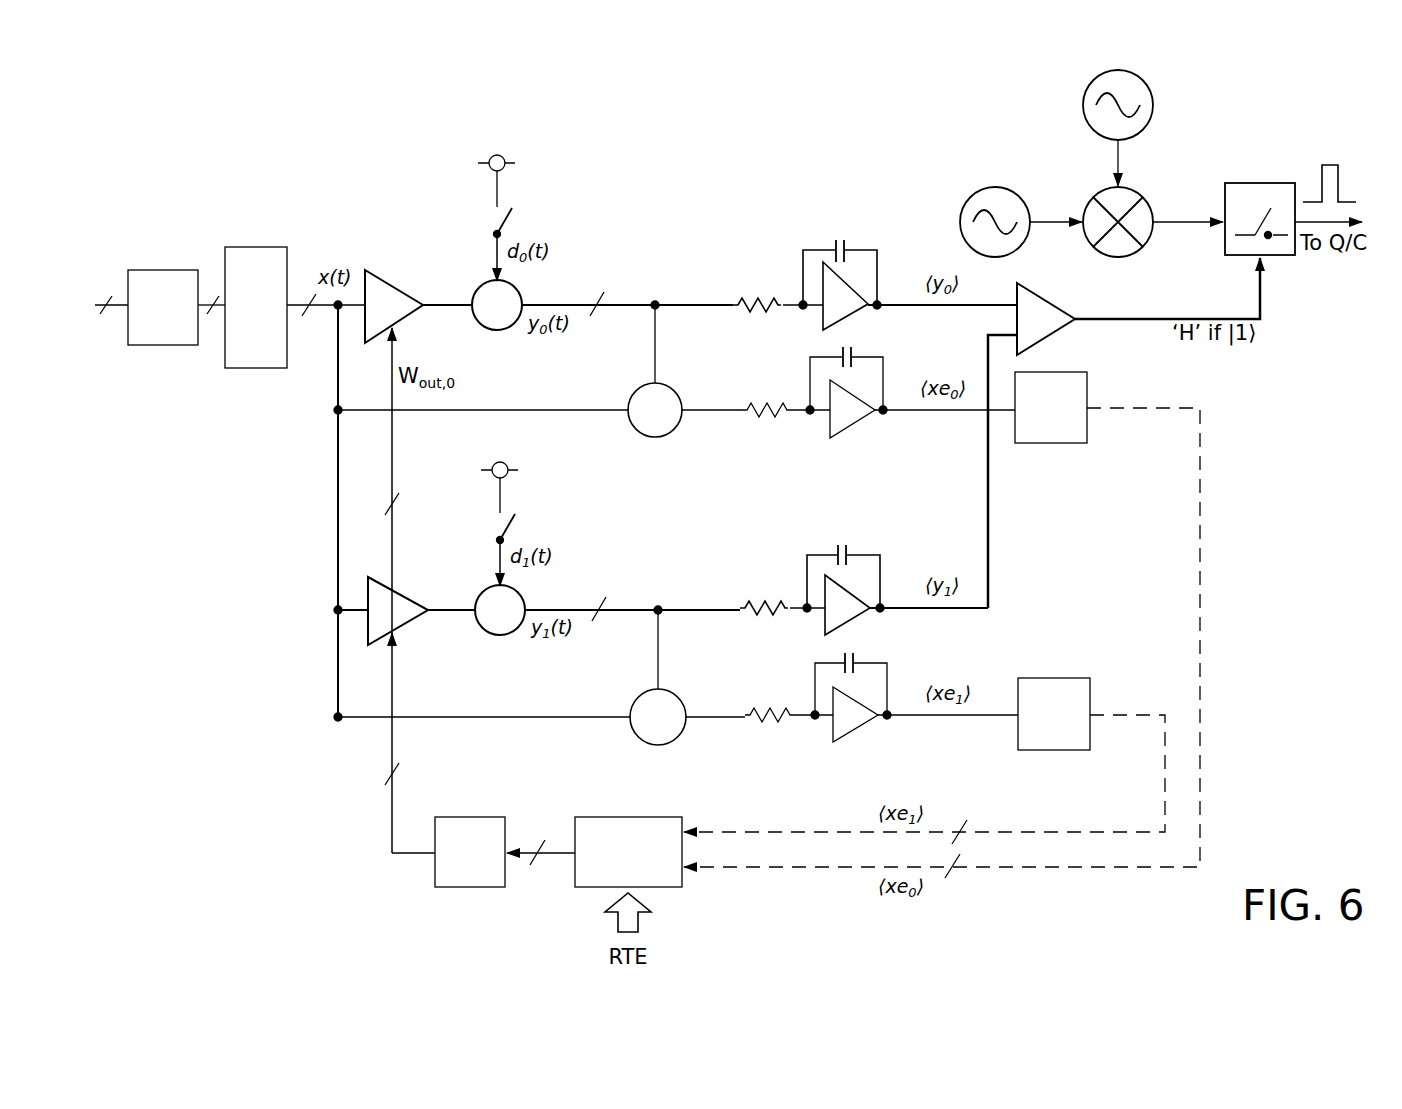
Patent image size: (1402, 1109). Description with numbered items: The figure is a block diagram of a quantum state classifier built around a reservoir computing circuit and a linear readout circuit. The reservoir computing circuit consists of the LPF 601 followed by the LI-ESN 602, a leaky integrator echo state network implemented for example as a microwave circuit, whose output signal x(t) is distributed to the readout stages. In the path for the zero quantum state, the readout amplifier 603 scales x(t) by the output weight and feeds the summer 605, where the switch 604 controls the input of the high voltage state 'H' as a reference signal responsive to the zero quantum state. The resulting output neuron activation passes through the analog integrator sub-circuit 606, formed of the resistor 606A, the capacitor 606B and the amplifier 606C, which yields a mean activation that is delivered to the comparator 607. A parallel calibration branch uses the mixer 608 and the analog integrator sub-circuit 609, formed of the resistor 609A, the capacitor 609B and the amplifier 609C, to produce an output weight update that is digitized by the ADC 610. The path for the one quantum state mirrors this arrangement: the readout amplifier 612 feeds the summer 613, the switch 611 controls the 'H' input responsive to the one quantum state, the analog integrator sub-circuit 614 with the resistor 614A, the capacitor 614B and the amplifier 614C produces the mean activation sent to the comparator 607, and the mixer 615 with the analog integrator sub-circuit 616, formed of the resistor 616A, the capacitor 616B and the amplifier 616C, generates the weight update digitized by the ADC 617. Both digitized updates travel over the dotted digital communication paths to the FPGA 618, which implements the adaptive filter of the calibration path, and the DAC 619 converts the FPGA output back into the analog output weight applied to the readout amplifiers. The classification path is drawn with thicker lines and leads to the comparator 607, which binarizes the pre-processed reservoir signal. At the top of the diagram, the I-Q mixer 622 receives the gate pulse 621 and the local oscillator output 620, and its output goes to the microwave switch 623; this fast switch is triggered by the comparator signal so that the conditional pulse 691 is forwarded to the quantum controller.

The LPF 601 is at (163, 307).
The LI-ESN 602 is at (256, 307).
The readout amplifier 603 is at (394, 306).
The switch 604 is at (566, 192).
The summer 605 is at (497, 319).
The analog integrator sub-circuit 606 is at (793, 263).
The resistor 606A is at (755, 315).
The capacitor 606B is at (855, 263).
The amplifier 606C is at (820, 278).
The comparator 607 is at (1046, 319).
The mixer 608 is at (632, 410).
The analog integrator sub-circuit 609 is at (804, 406).
The resistor 609A is at (762, 421).
The capacitor 609B is at (861, 369).
The amplifier 609C is at (828, 384).
The ADC 610 is at (1051, 407).
The switch 611 is at (566, 498).
The readout amplifier 612 is at (398, 611).
The summer 613 is at (500, 624).
The analog integrator sub-circuit 614 is at (793, 572).
The resistor 614A is at (760, 621).
The capacitor 614B is at (856, 567).
The amplifier 614C is at (822, 580).
The mixer 615 is at (635, 718).
The analog integrator sub-circuit 616 is at (807, 715).
The resistor 616A is at (769, 727).
The capacitor 616B is at (866, 674).
The amplifier 616C is at (830, 690).
The ADC 617 is at (1054, 714).
The Field Programmable Gate Array 618 is at (628, 852).
The DAC 619 is at (470, 852).
The Local Oscillator output 620 is at (995, 208).
The gate pulse 621 is at (1118, 90).
The I-Q mixer 622 is at (1118, 234).
The Microwave switch 623 is at (1260, 204).
The conditional pulse 691 is at (1330, 158).